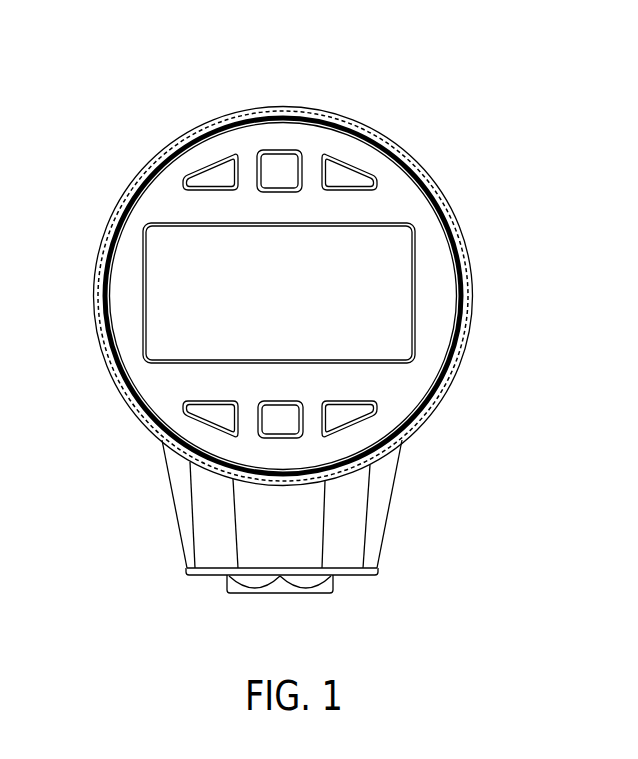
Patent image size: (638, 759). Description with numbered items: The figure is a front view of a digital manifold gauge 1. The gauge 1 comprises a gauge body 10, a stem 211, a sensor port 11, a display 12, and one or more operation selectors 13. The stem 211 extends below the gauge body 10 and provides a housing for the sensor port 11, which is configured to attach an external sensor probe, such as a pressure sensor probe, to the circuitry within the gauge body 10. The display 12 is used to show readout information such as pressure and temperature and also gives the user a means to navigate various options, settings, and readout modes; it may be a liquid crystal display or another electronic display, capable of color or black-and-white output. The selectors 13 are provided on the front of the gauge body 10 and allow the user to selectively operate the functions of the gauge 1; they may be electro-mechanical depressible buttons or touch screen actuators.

The digital manifold gauge 1 is at (106, 85).
The gauge body 10 is at (416, 150).
The sensor port 11 is at (340, 600).
The display 12 is at (397, 302).
The operation selectors 13 is at (213, 172).
The stem 211 is at (159, 489).